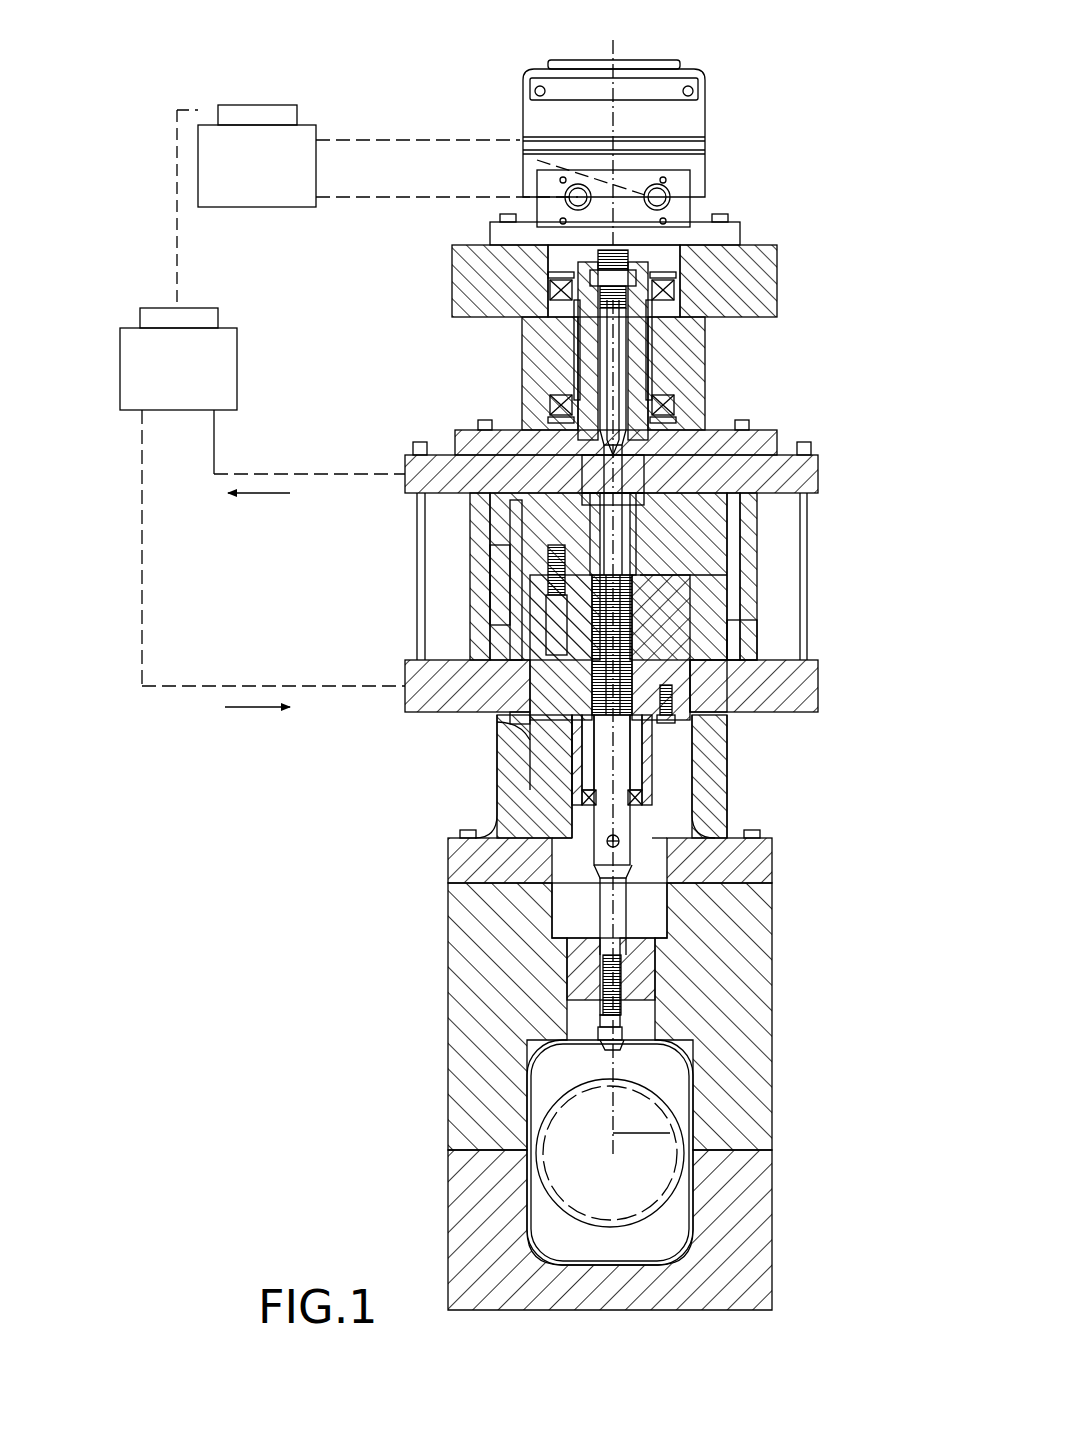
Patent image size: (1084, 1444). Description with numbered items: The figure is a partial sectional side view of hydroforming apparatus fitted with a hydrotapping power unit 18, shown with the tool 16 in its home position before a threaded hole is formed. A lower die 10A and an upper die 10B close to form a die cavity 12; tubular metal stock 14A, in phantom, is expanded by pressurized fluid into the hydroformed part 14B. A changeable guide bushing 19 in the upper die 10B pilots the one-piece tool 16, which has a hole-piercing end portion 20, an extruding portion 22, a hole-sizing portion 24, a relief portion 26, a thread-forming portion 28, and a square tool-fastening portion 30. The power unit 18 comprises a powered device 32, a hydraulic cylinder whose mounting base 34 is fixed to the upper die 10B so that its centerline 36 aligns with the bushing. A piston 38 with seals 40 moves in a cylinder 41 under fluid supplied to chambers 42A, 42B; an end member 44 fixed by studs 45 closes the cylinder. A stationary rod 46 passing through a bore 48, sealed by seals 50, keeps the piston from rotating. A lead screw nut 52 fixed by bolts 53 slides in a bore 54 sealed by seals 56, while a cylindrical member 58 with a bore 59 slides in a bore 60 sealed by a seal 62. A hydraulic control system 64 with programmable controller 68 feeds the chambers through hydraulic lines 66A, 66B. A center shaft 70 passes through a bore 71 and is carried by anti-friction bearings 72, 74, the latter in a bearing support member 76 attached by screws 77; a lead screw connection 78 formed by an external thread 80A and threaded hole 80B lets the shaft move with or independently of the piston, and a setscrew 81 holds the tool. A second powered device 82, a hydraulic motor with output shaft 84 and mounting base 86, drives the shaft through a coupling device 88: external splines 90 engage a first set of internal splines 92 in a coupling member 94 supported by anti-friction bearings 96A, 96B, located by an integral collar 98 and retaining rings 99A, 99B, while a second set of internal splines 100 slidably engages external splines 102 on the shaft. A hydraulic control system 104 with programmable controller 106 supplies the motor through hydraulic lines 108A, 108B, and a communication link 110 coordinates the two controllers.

The lower die 10A is at (772, 1258).
The upper die 10B is at (772, 1060).
The die cavity 12 is at (553, 1230).
The tubular metal stock 14A is at (680, 1090).
The hydroformed part 14B is at (690, 1048).
The tool 16 is at (560, 882).
The power unit 18 is at (845, 372).
The guide bushing 19 is at (567, 970).
The hole-piercing end portion 20 is at (605, 1052).
The extruding portion 22 is at (603, 1040).
The hole-sizing portion 24 is at (600, 1025).
The relief portion 26 is at (600, 1010).
The thread-forming portion 28 is at (600, 990).
The tool-fastening portion 30 is at (592, 907).
The powered device 32 is at (772, 597).
The mounting base 34 is at (715, 772).
The centerline 36 is at (665, 1133).
The piston 38 is at (725, 556).
The seals 40 is at (745, 515).
The cylinder 41 is at (722, 645).
The chamber 42A is at (700, 460).
The chamber 42B is at (722, 680).
The end member 44 is at (828, 470).
The studs 45 is at (805, 608).
The stationary rod 46 is at (548, 580).
The bore 48 is at (548, 560).
The seals 50 is at (512, 522).
The lead screw nut 52 is at (705, 678).
The bolts 53 is at (492, 592).
The bore 54 is at (535, 790).
The seals 56 is at (520, 700).
The cylindrical member 58 is at (622, 385).
The bore 59 is at (560, 508).
The bore 60 is at (585, 442).
The seal 62 is at (585, 468).
The hydraulic control system 64 is at (120, 340).
The hydraulic line 66A is at (240, 470).
The hydraulic line 66B is at (142, 510).
The programmable controller 68 is at (150, 308).
The center shaft 70 is at (635, 830).
The bore 71 is at (700, 570).
The anti-friction bearing 72 is at (660, 495).
The anti-friction bearing 74 is at (578, 800).
The bearing support member 76 is at (645, 797).
The screws 77 is at (670, 722).
The lead screw connection 78 is at (652, 600).
The external thread 80A is at (582, 730).
The threaded hole 80B is at (582, 775).
The setscrew 81 is at (620, 845).
The second powered device 82 is at (703, 118).
The output shaft 84 is at (630, 246).
The mounting base 86 is at (668, 335).
The coupling device 88 is at (650, 278).
The external splines 90 is at (598, 262).
The first set of internal splines 92 is at (636, 272).
The coupling member 94 is at (562, 352).
The anti-friction bearing 96A is at (552, 291).
The anti-friction bearing 96B is at (556, 405).
The integral collar 98 is at (575, 305).
The retaining ring 99A is at (555, 275).
The retaining ring 99B is at (556, 418).
The second set of internal splines 100 is at (626, 295).
The external splines 102 is at (652, 300).
The hydraulic control system 104 is at (312, 126).
The programmable controller 106 is at (258, 105).
The hydraulic line 108A is at (413, 197).
The hydraulic line 108B is at (377, 140).
The communication link 110 is at (177, 205).